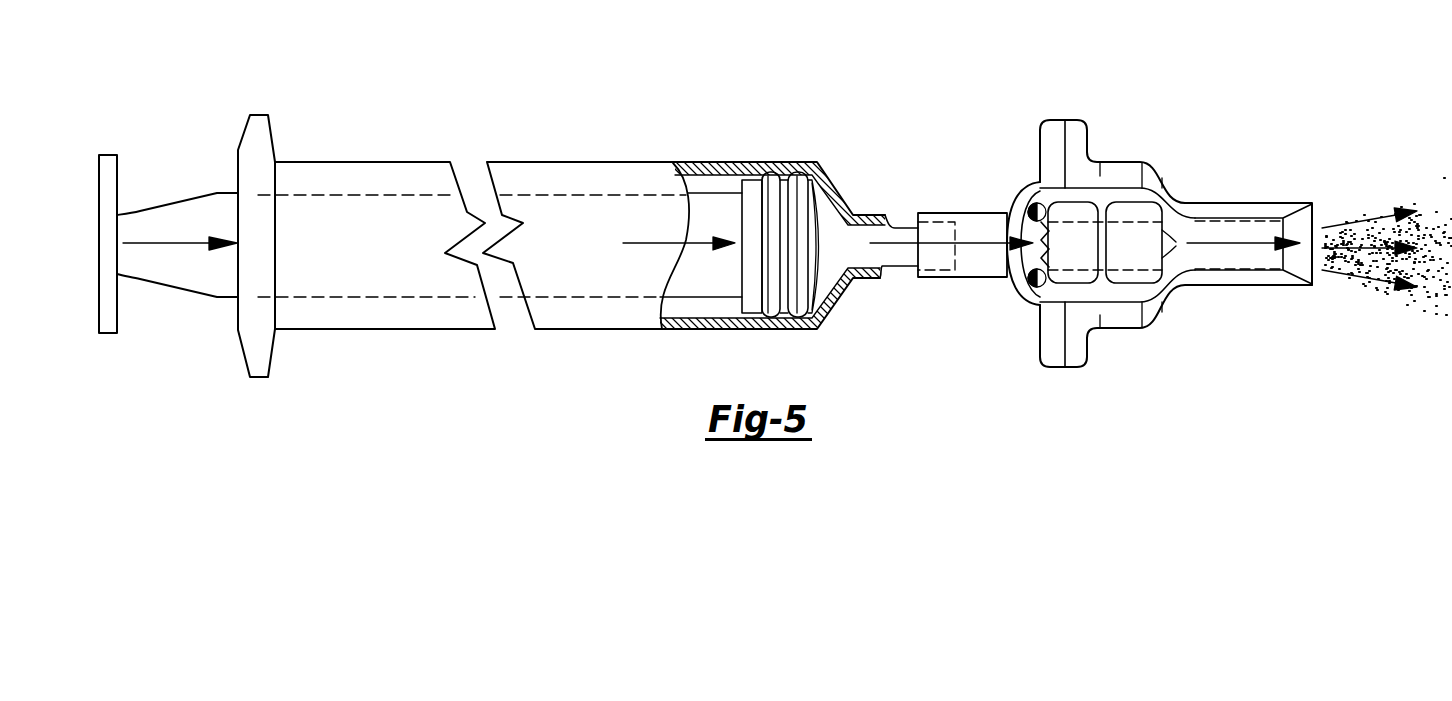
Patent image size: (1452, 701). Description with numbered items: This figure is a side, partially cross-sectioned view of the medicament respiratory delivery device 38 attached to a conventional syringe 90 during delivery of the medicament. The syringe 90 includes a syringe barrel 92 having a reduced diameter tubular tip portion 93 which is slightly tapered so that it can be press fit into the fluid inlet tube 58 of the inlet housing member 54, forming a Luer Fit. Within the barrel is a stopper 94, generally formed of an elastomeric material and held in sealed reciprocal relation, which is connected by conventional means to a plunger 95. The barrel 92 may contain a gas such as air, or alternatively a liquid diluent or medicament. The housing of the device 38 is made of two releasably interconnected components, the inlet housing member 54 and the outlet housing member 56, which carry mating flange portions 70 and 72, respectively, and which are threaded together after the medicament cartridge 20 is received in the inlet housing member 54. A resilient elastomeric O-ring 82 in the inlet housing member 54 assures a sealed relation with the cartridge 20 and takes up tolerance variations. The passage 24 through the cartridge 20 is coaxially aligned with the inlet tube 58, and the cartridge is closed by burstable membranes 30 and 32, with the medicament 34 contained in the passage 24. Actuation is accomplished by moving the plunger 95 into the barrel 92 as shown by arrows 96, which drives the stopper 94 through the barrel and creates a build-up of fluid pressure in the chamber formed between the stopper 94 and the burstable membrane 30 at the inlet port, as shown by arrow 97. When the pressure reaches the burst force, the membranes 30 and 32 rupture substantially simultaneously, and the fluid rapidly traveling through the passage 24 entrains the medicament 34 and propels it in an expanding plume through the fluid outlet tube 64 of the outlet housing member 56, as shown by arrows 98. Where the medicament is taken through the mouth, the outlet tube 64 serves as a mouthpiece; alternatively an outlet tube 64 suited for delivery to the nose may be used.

The syringe 90 is at (512, 128).
The syringe barrel 92 is at (780, 162).
The stopper 94 is at (771, 303).
The plunger 95 is at (210, 278).
The arrows indicating plunger movement 96 is at (168, 243).
The arrow indicating fluid pressure build-up 97 is at (906, 226).
The tubular tip portion 93 is at (908, 270).
The fluid inlet tube 58 is at (977, 262).
The O-ring 82 is at (951, 300).
The inlet housing member 54 is at (1020, 203).
The burstable membrane 30 is at (1037, 202).
The passage 24 is at (1092, 262).
The mating flange portion 70 is at (1052, 138).
The mating flange portion 72 is at (1077, 136).
The medicament respiratory delivery device 38 is at (1158, 153).
The outlet housing member 56 is at (1157, 314).
The fluid outlet tube 64 is at (1260, 212).
The medicament cartridge 20 is at (1127, 265).
The burstable membrane 32 is at (1166, 220).
The medicament 34 is at (1418, 195).
The arrows indicating medicament plume 98 is at (1371, 278).